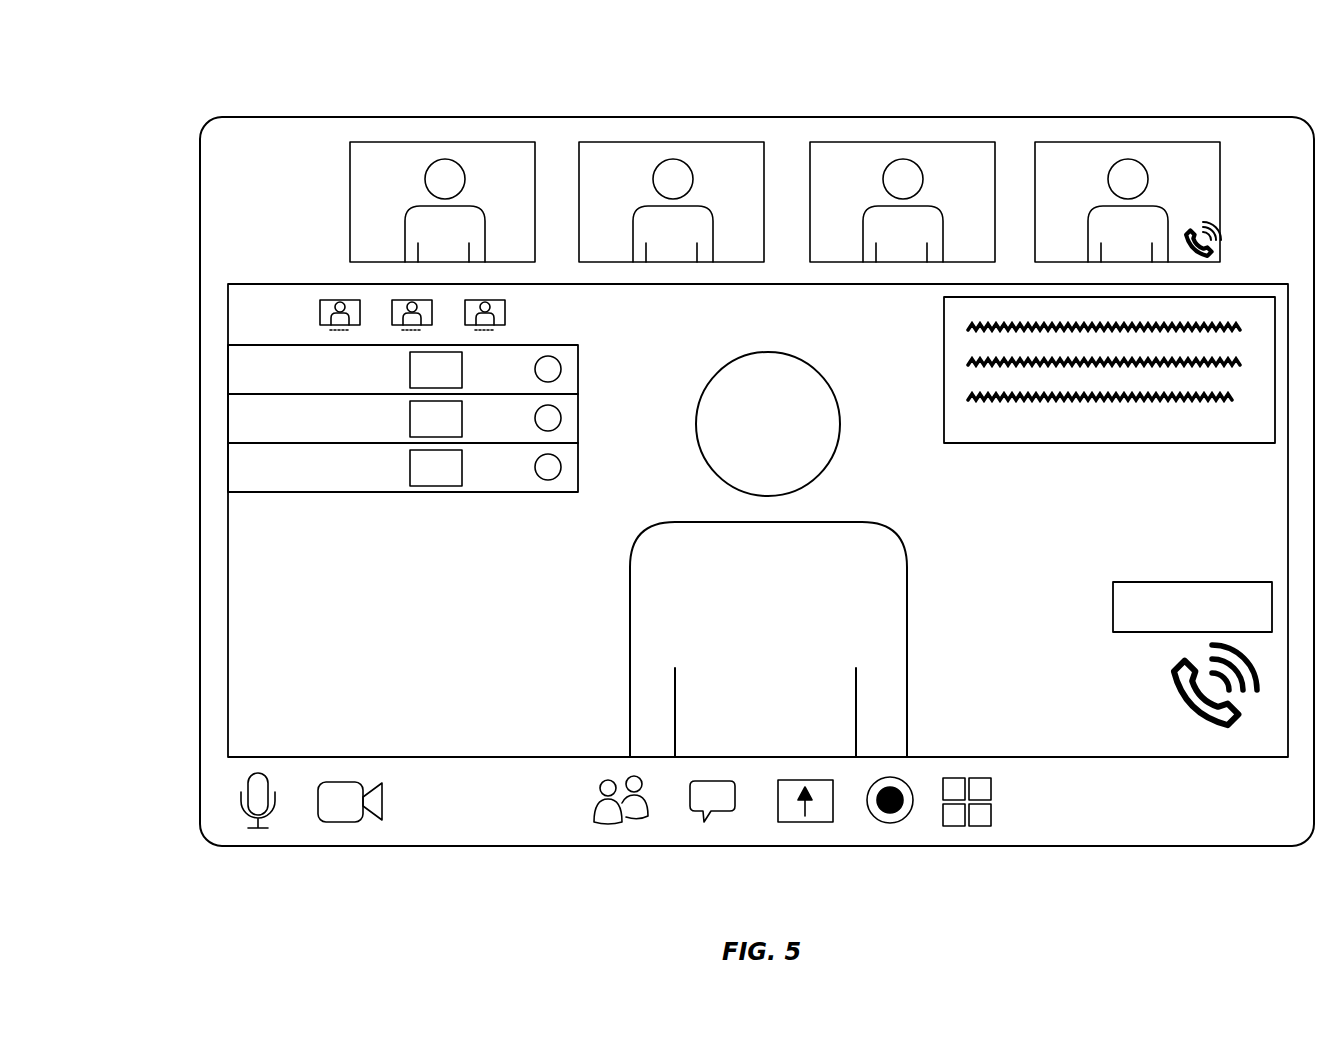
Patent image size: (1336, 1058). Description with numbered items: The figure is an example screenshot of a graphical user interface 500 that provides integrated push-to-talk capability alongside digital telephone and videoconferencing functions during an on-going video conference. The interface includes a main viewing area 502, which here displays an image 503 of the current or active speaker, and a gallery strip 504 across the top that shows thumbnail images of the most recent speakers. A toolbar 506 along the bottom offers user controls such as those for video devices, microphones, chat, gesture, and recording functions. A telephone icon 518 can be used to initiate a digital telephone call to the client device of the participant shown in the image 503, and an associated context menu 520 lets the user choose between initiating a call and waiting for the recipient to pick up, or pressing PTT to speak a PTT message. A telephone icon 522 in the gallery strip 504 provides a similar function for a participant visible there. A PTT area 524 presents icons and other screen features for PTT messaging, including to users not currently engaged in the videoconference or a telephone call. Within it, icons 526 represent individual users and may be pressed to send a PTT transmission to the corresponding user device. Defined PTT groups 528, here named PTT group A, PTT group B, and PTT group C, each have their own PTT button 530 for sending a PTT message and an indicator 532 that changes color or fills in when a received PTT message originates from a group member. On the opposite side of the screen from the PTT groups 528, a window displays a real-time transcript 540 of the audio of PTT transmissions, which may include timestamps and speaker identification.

The graphical user interface 500 is at (148, 116).
The main viewing area 502 is at (247, 659).
The image 503 is at (908, 601).
The gallery strip 504 is at (656, 128).
The toolbar 506 is at (1142, 835).
The telephone icon 518 is at (1162, 683).
The context menu 520 is at (1204, 582).
The telephone icon 522 is at (1222, 243).
The PTT area 524 is at (272, 293).
The icons 526 is at (536, 312).
The PTT groups 528 is at (363, 494).
The PTT button 530 is at (452, 480).
The indicator 532 is at (536, 369).
The real-time transcript 540 is at (1040, 445).